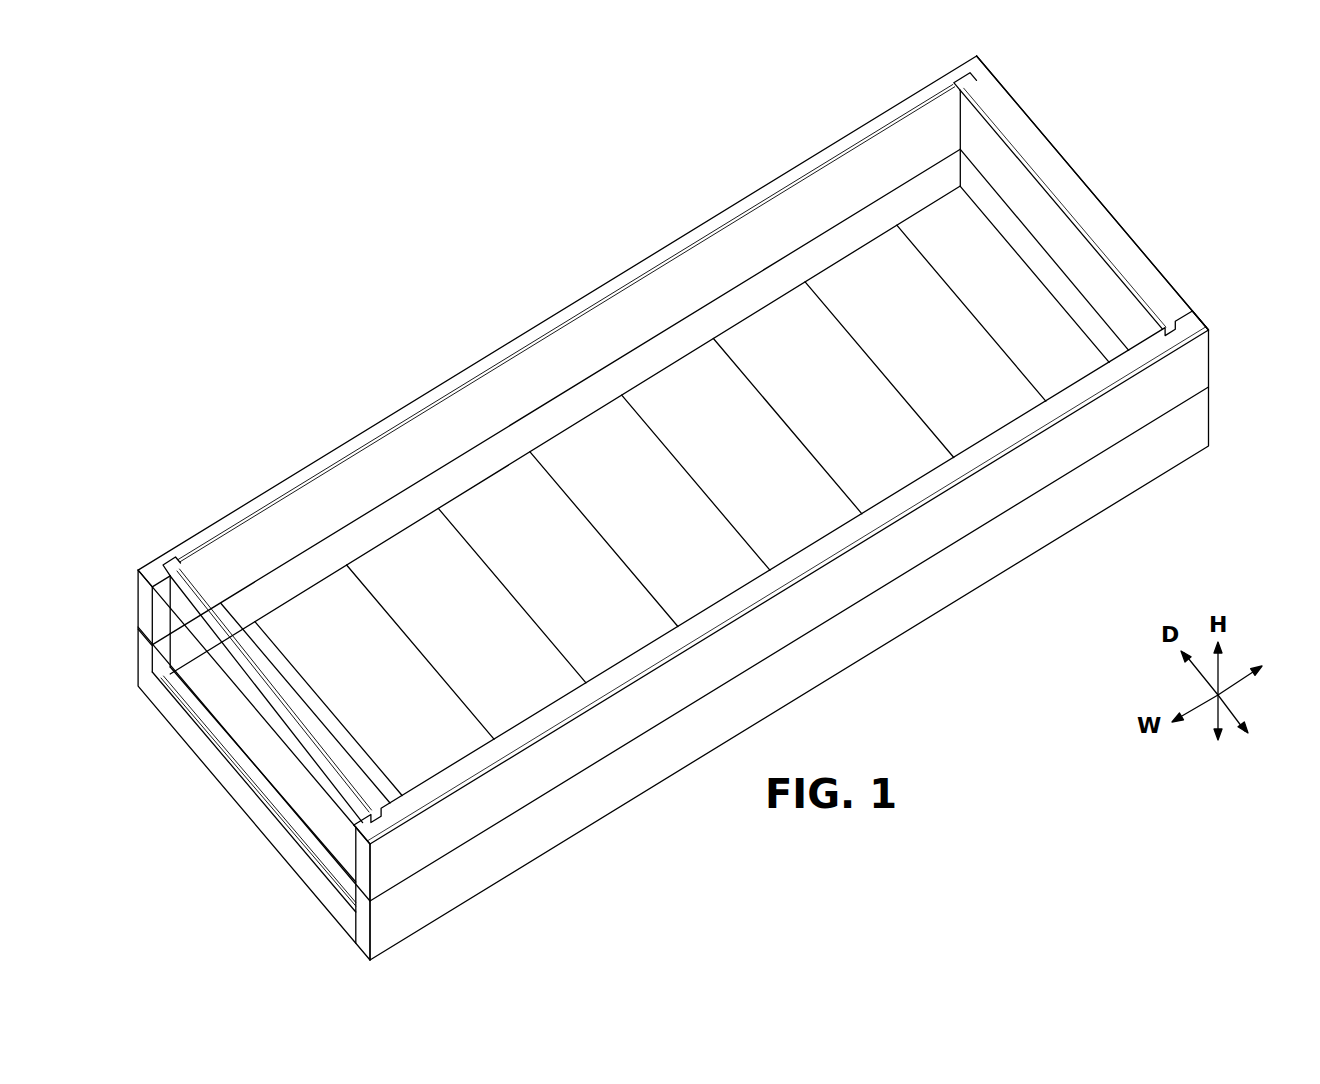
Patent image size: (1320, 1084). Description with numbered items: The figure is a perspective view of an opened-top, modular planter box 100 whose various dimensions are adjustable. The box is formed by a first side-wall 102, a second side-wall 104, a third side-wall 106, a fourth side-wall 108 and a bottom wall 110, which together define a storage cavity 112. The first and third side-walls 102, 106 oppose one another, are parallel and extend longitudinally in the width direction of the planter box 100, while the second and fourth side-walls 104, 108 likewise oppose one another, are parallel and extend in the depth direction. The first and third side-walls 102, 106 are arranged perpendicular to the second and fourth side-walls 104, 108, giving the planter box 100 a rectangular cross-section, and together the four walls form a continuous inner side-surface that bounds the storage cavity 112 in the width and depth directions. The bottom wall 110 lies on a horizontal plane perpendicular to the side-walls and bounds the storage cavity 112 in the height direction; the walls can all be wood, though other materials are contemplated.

The planter box 100 is at (1148, 92).
The first side-wall 102 is at (523, 349).
The second side-wall 104 is at (250, 725).
The third side-wall 106 is at (510, 846).
The fourth side-wall 108 is at (1133, 265).
The bottom wall 110 is at (676, 540).
The storage cavity 112 is at (984, 257).